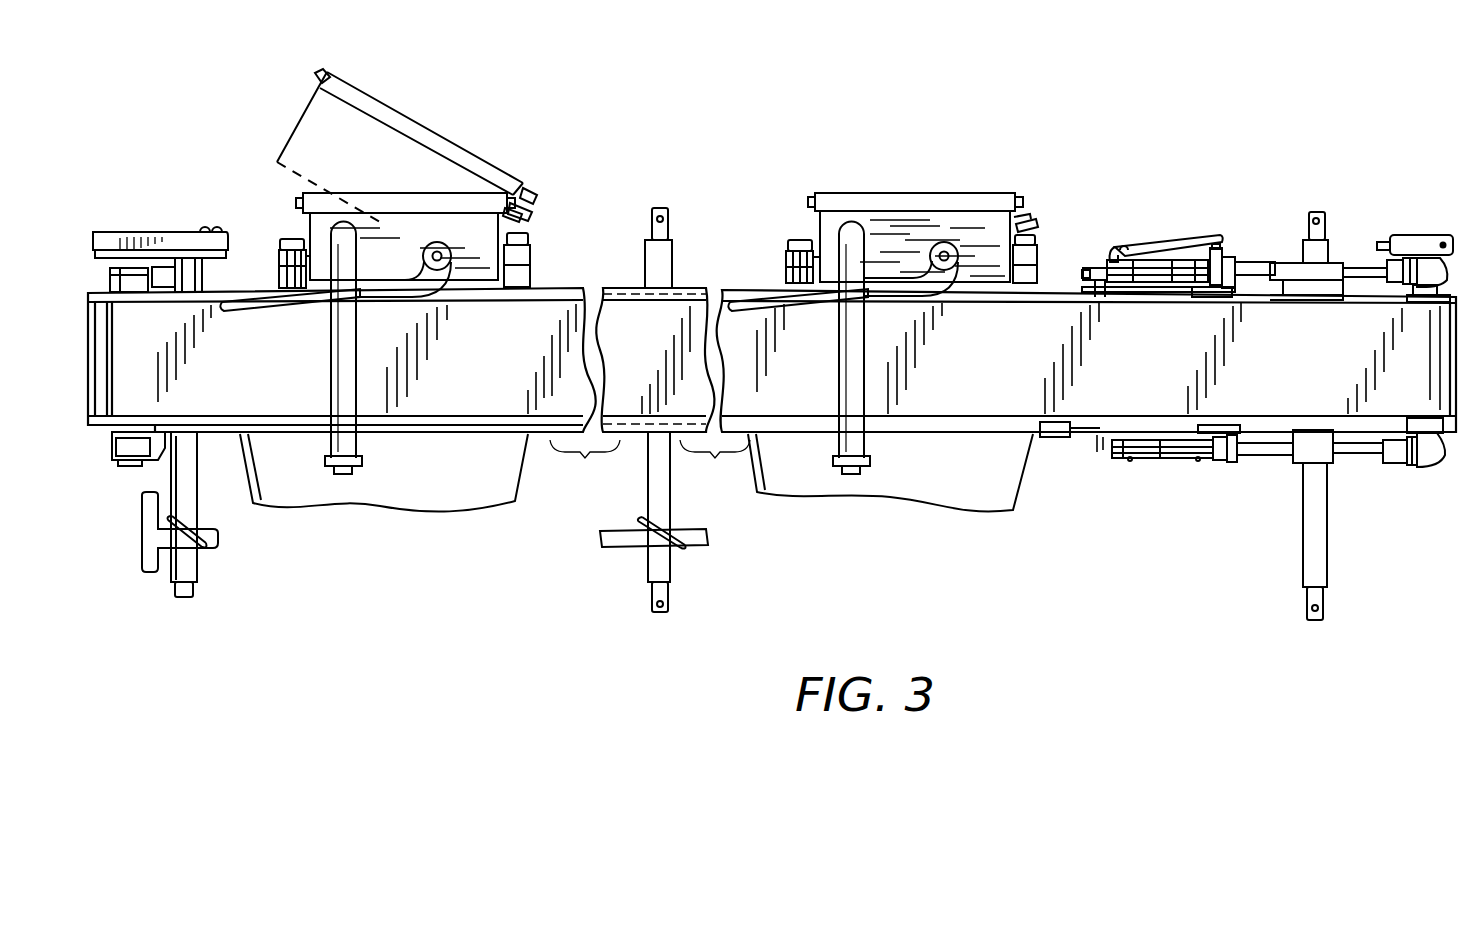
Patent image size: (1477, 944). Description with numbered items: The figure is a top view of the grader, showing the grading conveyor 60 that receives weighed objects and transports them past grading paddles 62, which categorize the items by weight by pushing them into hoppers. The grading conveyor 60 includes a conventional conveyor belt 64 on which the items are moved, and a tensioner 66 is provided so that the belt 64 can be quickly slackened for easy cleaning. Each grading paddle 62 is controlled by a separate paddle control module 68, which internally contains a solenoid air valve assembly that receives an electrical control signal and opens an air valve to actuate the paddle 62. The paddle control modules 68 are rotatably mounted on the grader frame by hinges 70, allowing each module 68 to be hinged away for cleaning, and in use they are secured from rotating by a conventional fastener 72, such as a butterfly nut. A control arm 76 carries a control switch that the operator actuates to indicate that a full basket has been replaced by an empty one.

The grading conveyor 60 is at (779, 176).
The grading paddle 62 is at (239, 302).
The conveyor belt 64 is at (1112, 388).
The tensioner 66 is at (1232, 256).
The paddle control module 68 is at (537, 125).
The hinge 70 is at (545, 265).
The fastener 72 is at (291, 237).
The control arm 76 is at (370, 461).